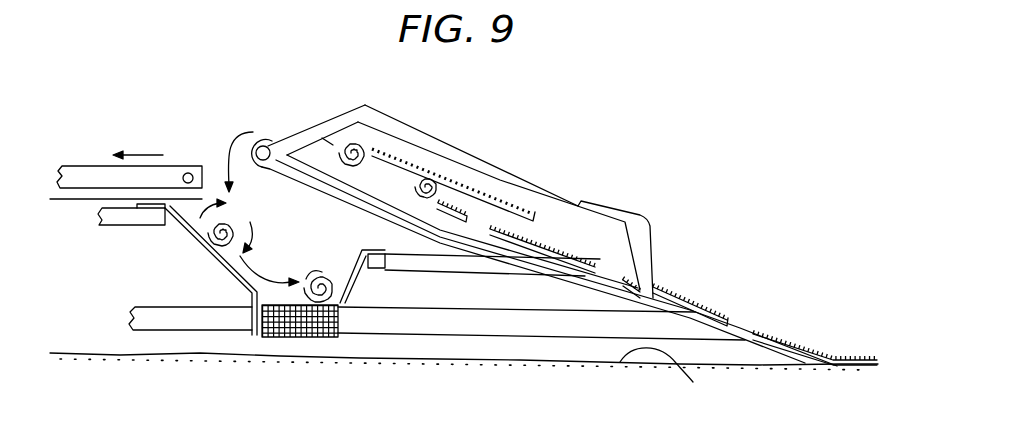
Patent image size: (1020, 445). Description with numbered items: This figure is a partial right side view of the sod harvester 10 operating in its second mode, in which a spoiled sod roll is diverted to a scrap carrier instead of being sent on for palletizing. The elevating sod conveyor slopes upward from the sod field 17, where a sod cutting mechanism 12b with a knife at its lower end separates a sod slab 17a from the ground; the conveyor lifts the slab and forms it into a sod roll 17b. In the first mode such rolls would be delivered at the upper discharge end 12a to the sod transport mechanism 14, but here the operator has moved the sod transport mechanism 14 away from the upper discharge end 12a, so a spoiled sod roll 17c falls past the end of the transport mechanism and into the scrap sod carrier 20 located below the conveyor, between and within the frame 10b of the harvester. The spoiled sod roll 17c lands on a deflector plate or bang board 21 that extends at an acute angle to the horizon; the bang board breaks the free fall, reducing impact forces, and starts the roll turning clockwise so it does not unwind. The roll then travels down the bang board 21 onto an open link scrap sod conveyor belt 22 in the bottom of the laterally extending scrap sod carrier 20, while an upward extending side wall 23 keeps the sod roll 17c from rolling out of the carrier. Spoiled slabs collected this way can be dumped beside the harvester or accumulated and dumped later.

The sod harvester 10 is at (503, 118).
The frame 10b is at (483, 323).
The upper discharge end 12a is at (262, 146).
The sod cutting mechanism 12b is at (778, 342).
The sod transport mechanism 14 is at (98, 172).
The sod field 17 is at (661, 381).
The sod slab 17a is at (690, 295).
The sod roll 17b is at (367, 145).
The spoiled sod roll 17c is at (240, 218).
The scrap sod carrier 20 is at (160, 274).
The bang board 21 is at (186, 229).
The scrap sod conveyor belt 22 is at (313, 338).
The side wall 23 is at (358, 275).